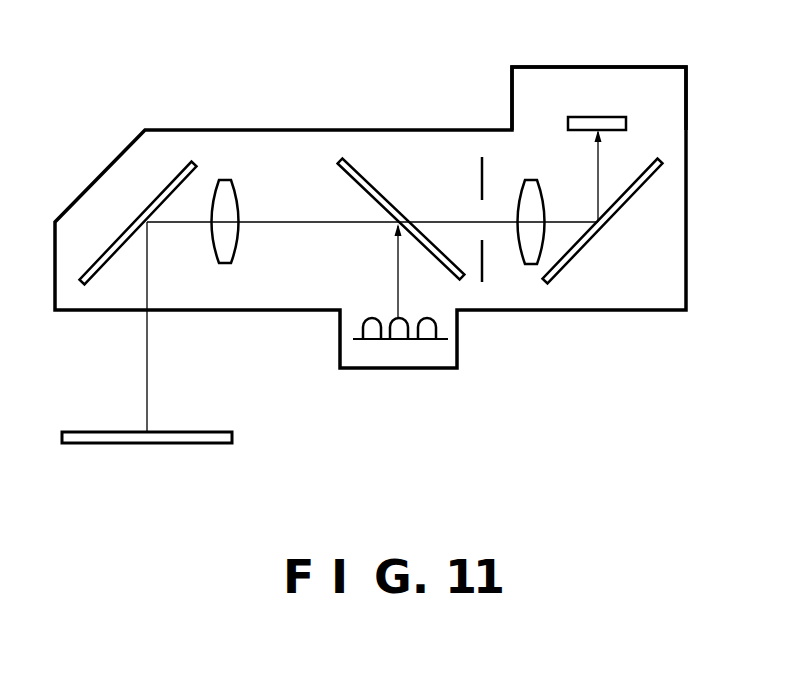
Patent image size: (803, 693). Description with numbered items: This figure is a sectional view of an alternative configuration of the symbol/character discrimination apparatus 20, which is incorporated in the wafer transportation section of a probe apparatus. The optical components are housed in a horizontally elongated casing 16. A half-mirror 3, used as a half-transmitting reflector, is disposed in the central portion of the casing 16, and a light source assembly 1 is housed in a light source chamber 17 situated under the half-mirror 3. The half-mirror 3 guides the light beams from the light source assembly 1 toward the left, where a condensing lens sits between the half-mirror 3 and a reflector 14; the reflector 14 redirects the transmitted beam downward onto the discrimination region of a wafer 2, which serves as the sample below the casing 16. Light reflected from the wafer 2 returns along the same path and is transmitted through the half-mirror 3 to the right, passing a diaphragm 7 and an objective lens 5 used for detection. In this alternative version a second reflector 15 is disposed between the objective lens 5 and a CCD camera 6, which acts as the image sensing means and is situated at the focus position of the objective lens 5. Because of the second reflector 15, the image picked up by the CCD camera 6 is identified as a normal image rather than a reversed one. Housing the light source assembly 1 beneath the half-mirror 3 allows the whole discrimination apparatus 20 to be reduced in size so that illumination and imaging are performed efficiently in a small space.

The light source assembly 1 is at (400, 372).
The wafer 2 is at (187, 445).
The half-mirror 3 is at (358, 167).
The objective lens 5 is at (526, 251).
The CCD camera 6 is at (675, 91).
The diaphragm 7 is at (480, 174).
The reflector 14 is at (187, 167).
The second reflector 15 is at (657, 174).
The casing 16 is at (268, 128).
The light source chamber 17 is at (380, 356).
The discrimination apparatus 20 is at (552, 65).